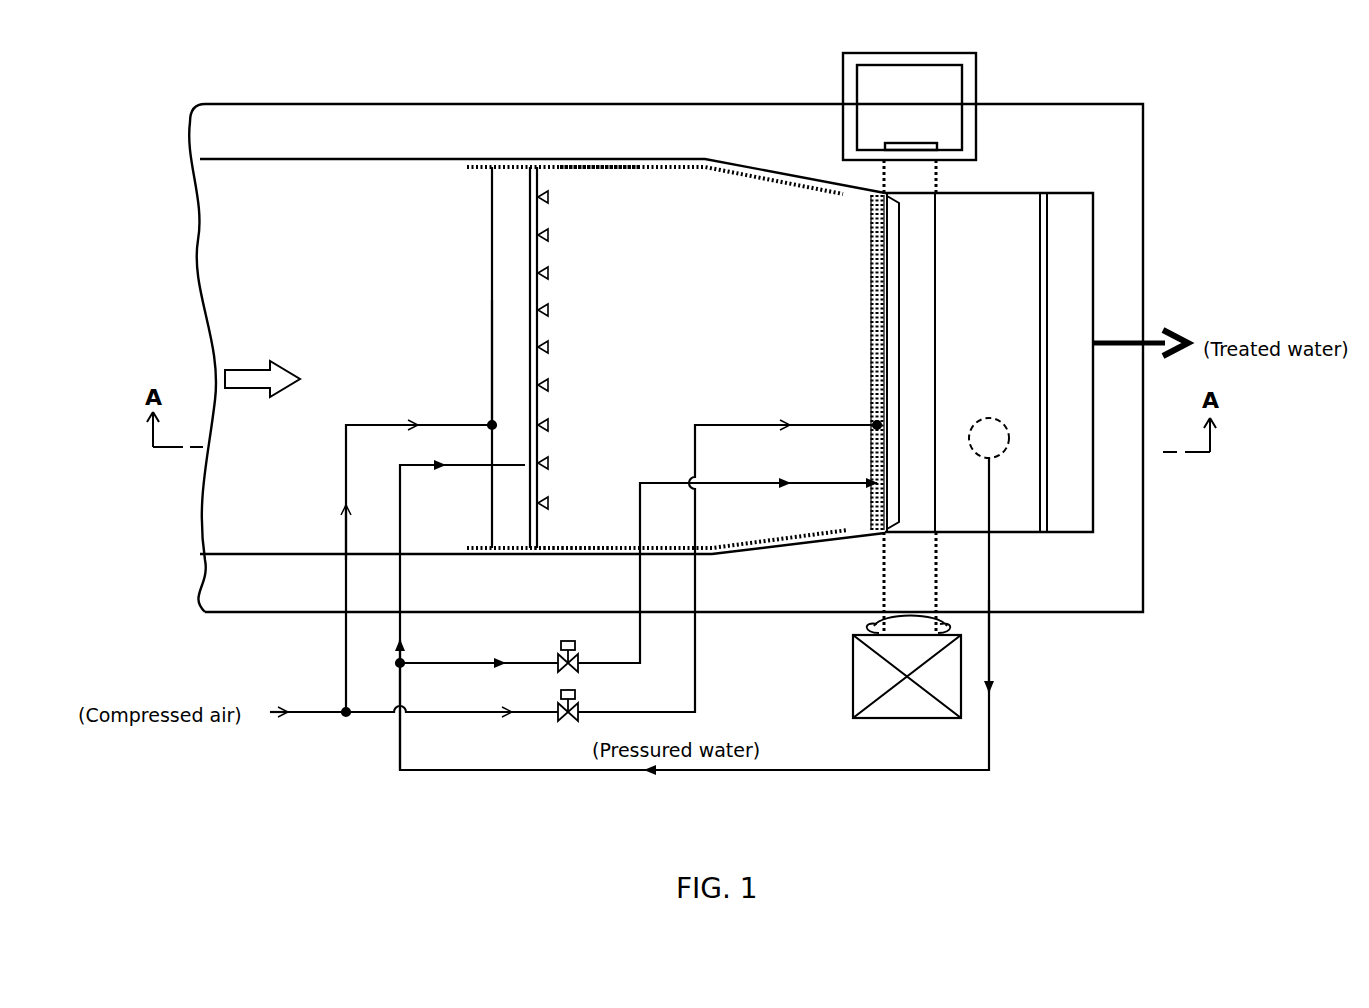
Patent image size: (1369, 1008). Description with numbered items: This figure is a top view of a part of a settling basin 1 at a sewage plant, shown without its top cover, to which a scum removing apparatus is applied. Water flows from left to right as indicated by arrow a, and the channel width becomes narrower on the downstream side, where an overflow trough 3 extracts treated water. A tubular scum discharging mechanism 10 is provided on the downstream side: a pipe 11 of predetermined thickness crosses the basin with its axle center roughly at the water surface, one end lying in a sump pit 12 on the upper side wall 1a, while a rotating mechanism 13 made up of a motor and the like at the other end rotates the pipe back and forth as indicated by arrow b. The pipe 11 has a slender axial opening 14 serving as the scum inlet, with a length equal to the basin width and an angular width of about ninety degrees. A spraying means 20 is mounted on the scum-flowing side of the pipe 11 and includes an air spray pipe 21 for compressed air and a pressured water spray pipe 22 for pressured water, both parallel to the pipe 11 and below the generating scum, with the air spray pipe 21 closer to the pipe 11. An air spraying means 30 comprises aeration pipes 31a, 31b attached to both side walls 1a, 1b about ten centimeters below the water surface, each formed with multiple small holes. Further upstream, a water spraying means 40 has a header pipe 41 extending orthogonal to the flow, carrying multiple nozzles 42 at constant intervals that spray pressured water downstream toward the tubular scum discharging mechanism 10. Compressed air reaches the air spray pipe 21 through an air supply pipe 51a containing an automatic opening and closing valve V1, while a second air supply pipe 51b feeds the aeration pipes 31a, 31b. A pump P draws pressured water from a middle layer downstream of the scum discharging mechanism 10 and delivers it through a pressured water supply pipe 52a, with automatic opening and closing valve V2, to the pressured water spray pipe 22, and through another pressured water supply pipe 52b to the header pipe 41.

The settling basin 1 is at (491, 98).
The side wall 1a is at (616, 121).
The side wall 1b is at (262, 585).
The overflow trough 3 is at (1075, 262).
The tubular scum discharging mechanism 10 is at (940, 272).
The pipe 11 is at (920, 307).
The sump pit 12 is at (910, 76).
The rotating mechanism 13 is at (867, 675).
The opening 14 is at (893, 367).
The spraying means 20 is at (866, 275).
The air spray pipe 21 is at (868, 312).
The pressured water spray pipe 22 is at (868, 348).
The air spraying means 30 is at (626, 170).
The aeration pipe 31a is at (660, 168).
The aeration pipe 31b is at (735, 547).
The water spraying means 40 is at (553, 305).
The header pipe 41 is at (537, 257).
The nozzles 42 is at (548, 236).
The air supply pipe 51a is at (536, 712).
The air supply pipe 51b is at (346, 448).
The pressured water supply pipe 52a is at (536, 663).
The pressured water supply pipe 52b is at (400, 483).
The automatic opening and closing valve V1 is at (575, 701).
The automatic opening and closing valve V2 is at (575, 649).
The pump P is at (989, 438).
The arrow a is at (250, 368).
The arrow b is at (896, 620).